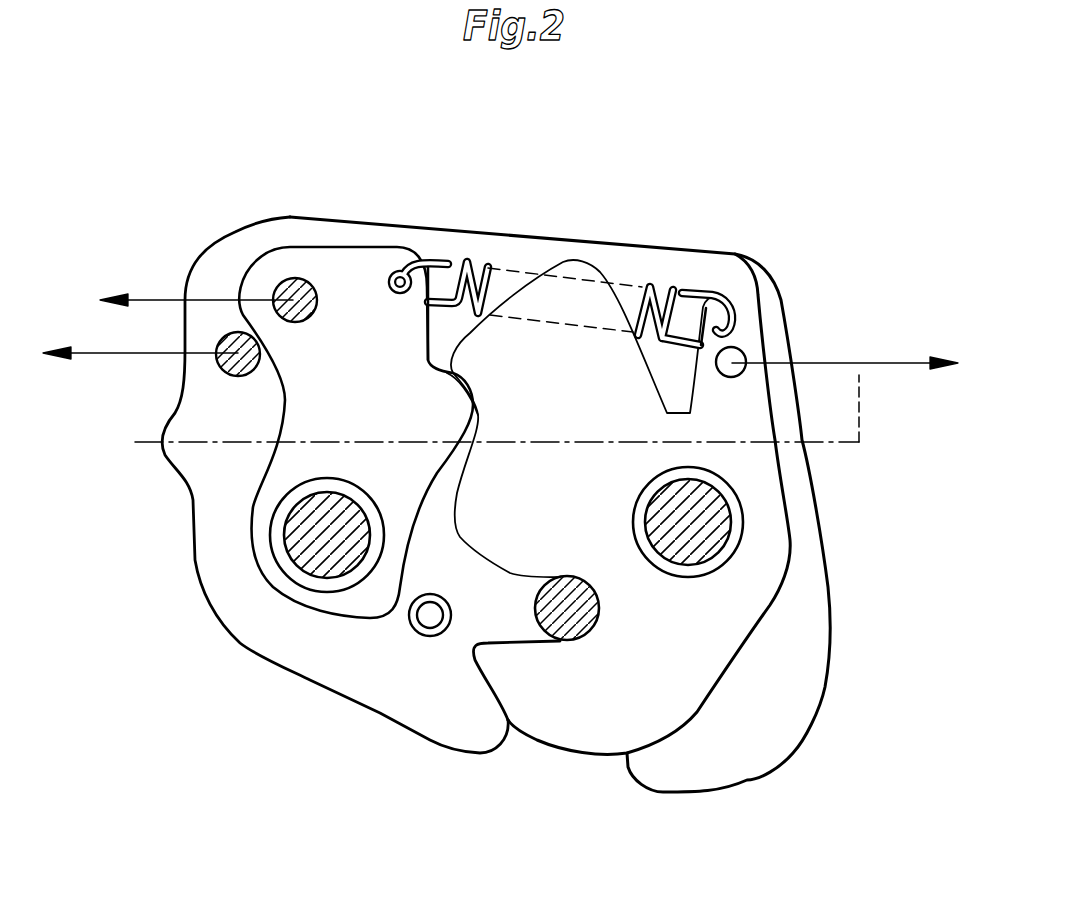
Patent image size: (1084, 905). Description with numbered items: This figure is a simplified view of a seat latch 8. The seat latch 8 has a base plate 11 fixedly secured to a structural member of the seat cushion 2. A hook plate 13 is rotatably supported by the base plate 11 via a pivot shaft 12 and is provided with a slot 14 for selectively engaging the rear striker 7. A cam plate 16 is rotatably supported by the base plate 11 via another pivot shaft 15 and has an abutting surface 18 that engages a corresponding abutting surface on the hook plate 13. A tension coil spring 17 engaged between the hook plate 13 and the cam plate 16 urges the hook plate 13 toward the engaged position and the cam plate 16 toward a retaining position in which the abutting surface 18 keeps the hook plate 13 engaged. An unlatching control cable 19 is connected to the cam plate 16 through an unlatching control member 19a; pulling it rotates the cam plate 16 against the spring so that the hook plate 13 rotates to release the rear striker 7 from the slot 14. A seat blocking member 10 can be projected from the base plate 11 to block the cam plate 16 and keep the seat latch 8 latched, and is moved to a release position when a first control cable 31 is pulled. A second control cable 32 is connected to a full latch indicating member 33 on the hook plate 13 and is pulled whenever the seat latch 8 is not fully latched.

The seat cushion 2 is at (843, 413).
The rear striker 7 is at (568, 625).
The seat latch 8 is at (820, 208).
The seat blocking member 10 is at (227, 365).
The base plate 11 is at (805, 575).
The pivot shaft 12 is at (717, 510).
The hook plate 13 is at (718, 647).
The slot 14 is at (522, 640).
The pivot shaft 15 is at (312, 550).
The cam plate 16 is at (303, 393).
The tension coil spring 17 is at (647, 290).
The abutting surface 18 is at (440, 368).
The unlatching control cable 19 is at (150, 297).
The unlatching control member 19a is at (295, 287).
The first control cable 31 is at (122, 352).
The second control cable 32 is at (920, 360).
The full latch indicating member 33 is at (730, 350).